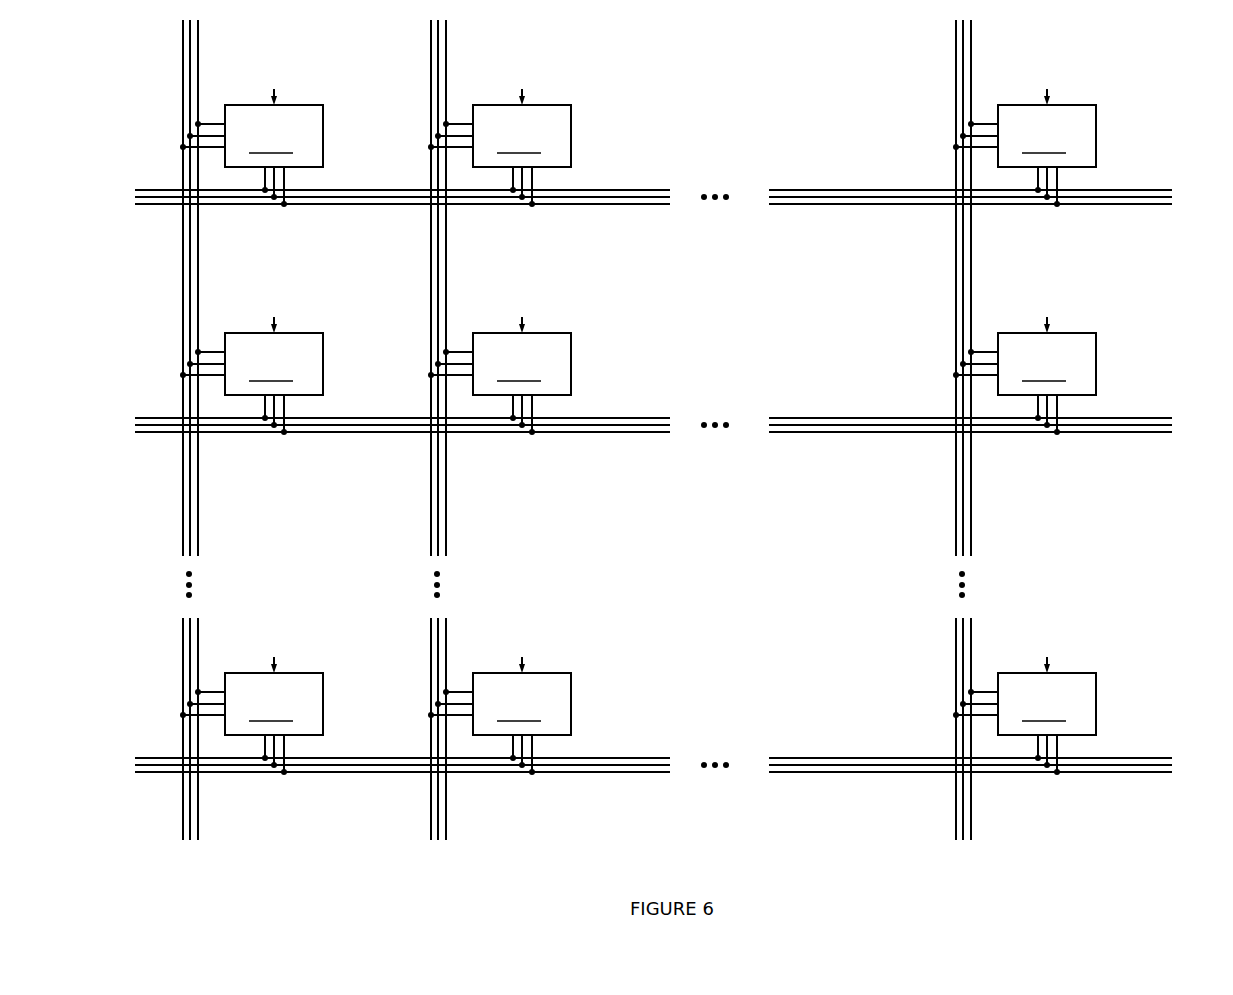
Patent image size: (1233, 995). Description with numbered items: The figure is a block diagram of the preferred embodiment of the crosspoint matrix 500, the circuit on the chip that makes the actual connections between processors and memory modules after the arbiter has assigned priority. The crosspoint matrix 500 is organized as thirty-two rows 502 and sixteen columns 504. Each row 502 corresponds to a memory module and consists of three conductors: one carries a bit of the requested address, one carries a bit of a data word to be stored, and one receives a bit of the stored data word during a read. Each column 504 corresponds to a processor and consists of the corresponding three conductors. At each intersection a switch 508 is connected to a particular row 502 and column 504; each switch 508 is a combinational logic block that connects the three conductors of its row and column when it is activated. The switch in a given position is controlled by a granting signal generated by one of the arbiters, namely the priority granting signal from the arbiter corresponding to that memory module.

The crosspoint matrix 500 is at (1166, 121).
The row 502 is at (114, 202).
The column 504 is at (187, 864).
The switch 508 is at (638, 420).